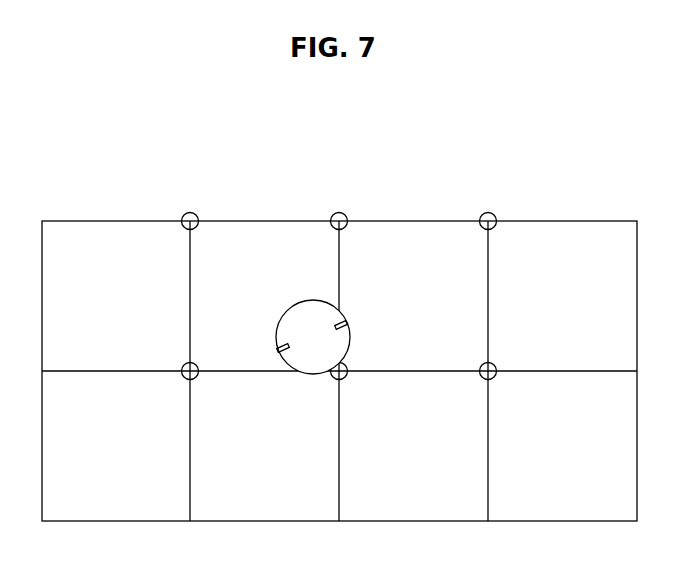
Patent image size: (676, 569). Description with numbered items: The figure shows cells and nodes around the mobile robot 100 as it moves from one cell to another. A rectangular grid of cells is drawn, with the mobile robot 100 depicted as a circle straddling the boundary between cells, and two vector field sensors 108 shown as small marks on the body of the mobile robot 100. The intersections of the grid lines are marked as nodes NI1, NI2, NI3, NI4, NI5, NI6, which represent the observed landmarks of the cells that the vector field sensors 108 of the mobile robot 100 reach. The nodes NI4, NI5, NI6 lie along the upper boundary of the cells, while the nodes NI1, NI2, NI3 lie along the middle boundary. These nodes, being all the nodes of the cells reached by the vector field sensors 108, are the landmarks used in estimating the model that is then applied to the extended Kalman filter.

The mobile robot 100 is at (305, 313).
The vector field sensors 108 is at (280, 346).
The network identifier node 1 NI1 is at (206, 386).
The network identifier node 2 NI2 is at (355, 386).
The network identifier node 3 NI3 is at (504, 386).
The network identifier node 4 NI4 is at (200, 209).
The network identifier node 5 NI5 is at (350, 209).
The network identifier node 6 NI6 is at (498, 209).